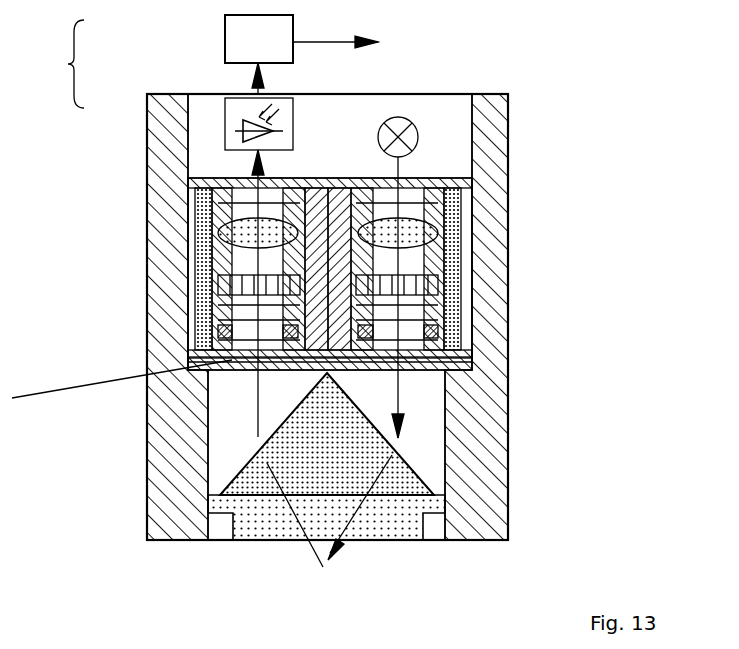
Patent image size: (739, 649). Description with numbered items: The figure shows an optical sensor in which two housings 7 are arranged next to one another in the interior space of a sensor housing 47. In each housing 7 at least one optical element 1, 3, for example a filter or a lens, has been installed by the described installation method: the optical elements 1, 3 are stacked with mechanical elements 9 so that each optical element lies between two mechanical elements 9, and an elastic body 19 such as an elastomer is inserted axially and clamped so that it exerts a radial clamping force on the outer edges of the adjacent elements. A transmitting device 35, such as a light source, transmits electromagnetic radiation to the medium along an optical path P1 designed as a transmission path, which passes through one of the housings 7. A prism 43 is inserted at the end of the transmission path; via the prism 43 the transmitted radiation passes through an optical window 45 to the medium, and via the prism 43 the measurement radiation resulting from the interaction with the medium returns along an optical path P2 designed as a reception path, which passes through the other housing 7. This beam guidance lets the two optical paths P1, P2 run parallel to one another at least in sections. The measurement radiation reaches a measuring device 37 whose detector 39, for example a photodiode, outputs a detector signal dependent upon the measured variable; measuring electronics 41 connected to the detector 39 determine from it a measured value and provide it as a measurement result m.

The optical element 1 is at (329, 245).
The optical element 3 is at (190, 213).
The housing 7 is at (445, 362).
The mechanical element 9 is at (195, 207).
The elastic body 19 is at (215, 326).
The transmitting device 35 is at (405, 128).
The measuring device 37 is at (162, 96).
The detector 39 is at (235, 122).
The measuring electronics 41 is at (245, 52).
The prism 43 is at (327, 434).
The optical window 45 is at (288, 522).
The sensor housing 47 is at (490, 140).
The optical path designed as a transmission path P1 is at (400, 387).
The optical path designed as a reception path P2 is at (257, 400).
The measurement result m is at (335, 33).